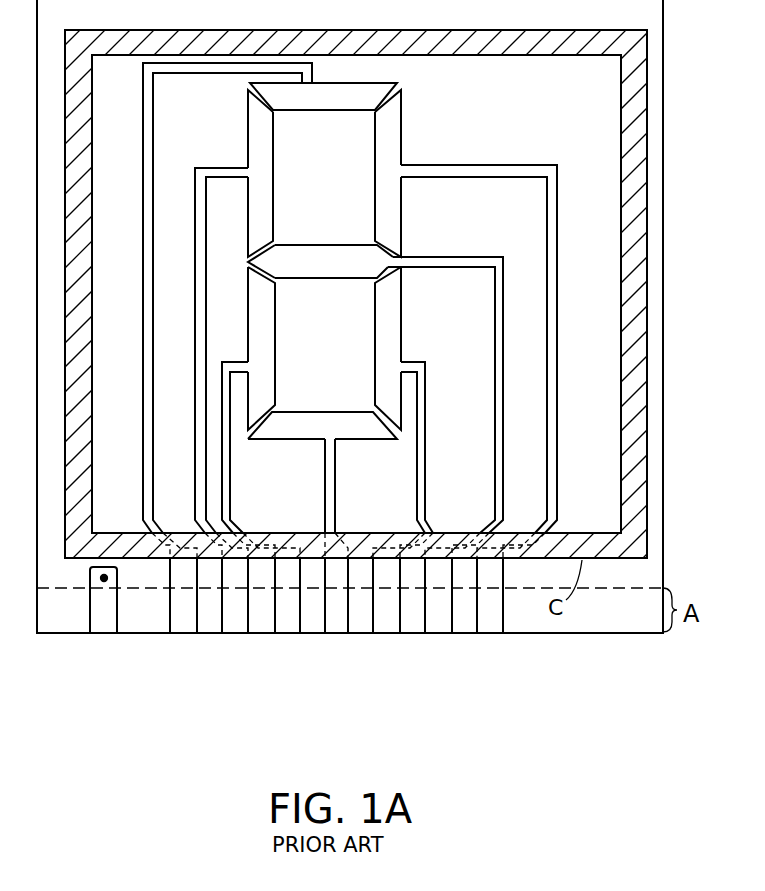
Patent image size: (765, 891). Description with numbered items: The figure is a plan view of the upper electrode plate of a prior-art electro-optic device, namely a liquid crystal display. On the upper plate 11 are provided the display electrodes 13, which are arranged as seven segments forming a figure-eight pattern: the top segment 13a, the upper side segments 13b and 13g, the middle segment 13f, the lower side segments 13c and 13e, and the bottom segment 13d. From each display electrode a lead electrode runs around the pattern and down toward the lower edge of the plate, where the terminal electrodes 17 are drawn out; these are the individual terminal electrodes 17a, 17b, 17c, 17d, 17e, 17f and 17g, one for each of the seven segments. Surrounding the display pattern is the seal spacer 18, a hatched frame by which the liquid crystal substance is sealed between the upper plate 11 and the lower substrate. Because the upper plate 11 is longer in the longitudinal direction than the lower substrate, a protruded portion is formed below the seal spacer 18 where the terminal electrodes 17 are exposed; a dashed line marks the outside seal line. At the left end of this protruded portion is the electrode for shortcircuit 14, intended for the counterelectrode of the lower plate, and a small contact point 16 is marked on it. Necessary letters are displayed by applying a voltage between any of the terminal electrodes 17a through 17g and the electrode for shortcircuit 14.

The upper plate 11 is at (655, 81).
The display electrodes 13 is at (428, 93).
The display electrode 13a is at (322, 102).
The display electrode 13b is at (258, 127).
The display electrode 13c is at (263, 307).
The display electrode 13d is at (305, 420).
The display electrode 13e is at (388, 308).
The display electrode 13f is at (338, 253).
The display electrode 13g is at (393, 123).
The electrode for shortcircuit 14 is at (103, 628).
The contact point 16 is at (103, 581).
The terminal electrodes 17 is at (336, 650).
The terminal electrode 17a is at (183, 636).
The terminal electrode 17b is at (235, 636).
The terminal electrode 17c is at (288, 636).
The terminal electrode 17d is at (338, 636).
The terminal electrode 17e is at (386, 636).
The terminal electrode 17f is at (440, 636).
The terminal electrode 17g is at (496, 623).
The seal spacer 18 is at (80, 283).